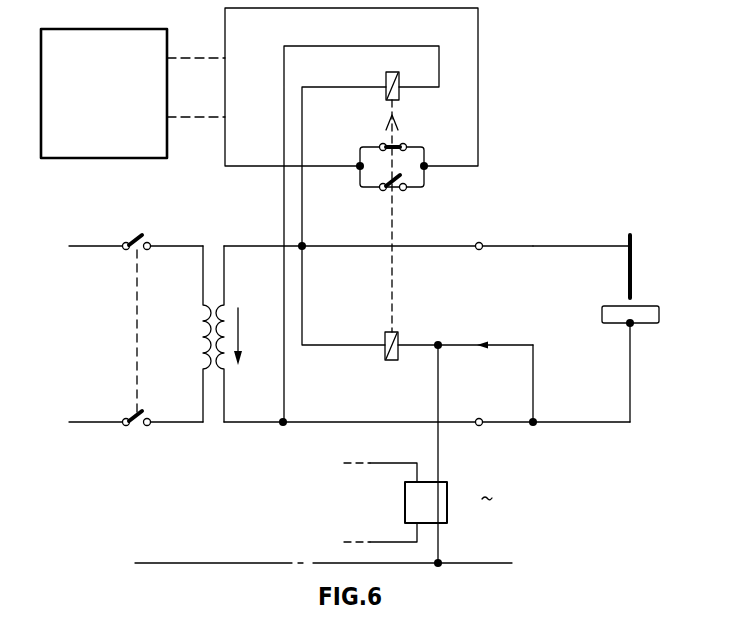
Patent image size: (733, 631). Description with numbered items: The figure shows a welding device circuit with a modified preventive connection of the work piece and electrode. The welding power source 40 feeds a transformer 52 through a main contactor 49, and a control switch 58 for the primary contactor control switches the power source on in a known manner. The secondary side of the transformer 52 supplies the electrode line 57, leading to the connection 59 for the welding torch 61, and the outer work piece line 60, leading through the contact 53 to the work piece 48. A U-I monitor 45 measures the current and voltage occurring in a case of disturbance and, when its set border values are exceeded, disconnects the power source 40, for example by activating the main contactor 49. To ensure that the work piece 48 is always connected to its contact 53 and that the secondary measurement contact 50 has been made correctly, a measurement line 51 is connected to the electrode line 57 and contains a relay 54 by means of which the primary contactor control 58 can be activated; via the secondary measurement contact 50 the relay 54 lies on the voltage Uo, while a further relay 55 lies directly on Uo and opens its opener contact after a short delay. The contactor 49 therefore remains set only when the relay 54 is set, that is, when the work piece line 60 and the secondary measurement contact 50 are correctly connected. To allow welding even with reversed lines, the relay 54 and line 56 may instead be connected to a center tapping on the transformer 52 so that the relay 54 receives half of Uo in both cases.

The welding power source 40 is at (195, 573).
The U-I monitor 45 is at (449, 499).
The work piece 48 is at (649, 325).
The main contactor 49 is at (136, 326).
The secondary measurement contact 50 is at (480, 352).
The measurement line 51 is at (527, 387).
The transformer 52 is at (203, 356).
The contact 53 is at (378, 436).
The relay 54 is at (386, 358).
The relay 55 is at (387, 96).
The line 56 is at (300, 299).
The electrode line 57 is at (437, 248).
The control switch 58 is at (81, 34).
The connection 59 is at (551, 244).
The outer work piece line 60 is at (575, 425).
The welding torch 61 is at (633, 265).